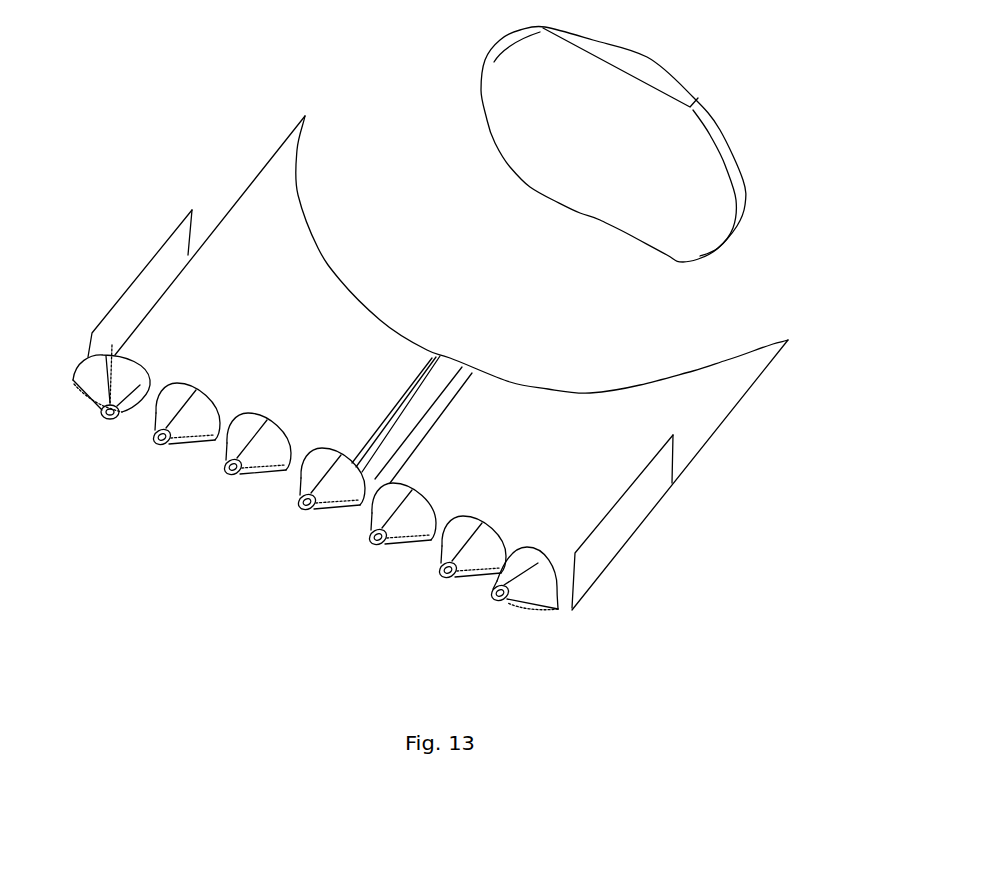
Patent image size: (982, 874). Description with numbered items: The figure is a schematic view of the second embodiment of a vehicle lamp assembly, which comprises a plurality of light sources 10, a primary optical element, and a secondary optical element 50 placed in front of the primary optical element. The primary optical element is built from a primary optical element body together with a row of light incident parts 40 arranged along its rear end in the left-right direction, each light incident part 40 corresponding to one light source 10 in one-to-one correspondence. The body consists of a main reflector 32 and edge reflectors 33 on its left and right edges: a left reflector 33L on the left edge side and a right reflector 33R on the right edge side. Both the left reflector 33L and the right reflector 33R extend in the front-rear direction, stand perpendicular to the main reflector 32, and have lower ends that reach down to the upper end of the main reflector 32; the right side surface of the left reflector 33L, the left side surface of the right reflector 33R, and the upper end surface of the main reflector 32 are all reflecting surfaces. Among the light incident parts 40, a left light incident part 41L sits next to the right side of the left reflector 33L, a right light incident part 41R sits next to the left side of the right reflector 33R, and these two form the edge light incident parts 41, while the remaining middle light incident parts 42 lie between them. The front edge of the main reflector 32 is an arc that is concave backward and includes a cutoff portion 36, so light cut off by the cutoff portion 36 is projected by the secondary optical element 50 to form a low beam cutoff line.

The light source 10 is at (112, 418).
The main reflector 32 is at (512, 408).
The edge reflector 33 is at (448, 380).
The left reflector 33L is at (153, 280).
The right reflector 33R is at (623, 527).
The cutoff portion 36 is at (342, 282).
The light incident part 40 is at (433, 553).
The edge light incident part 41 is at (303, 526).
The left light incident part 41L is at (90, 388).
The right light incident part 41R is at (535, 592).
The middle light incident part 42 is at (375, 508).
The secondary optical element 50 is at (690, 160).